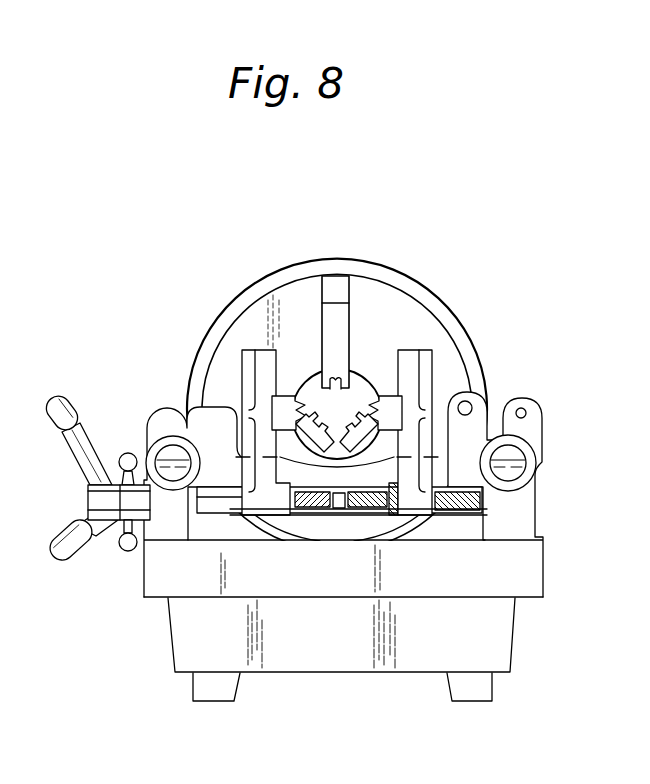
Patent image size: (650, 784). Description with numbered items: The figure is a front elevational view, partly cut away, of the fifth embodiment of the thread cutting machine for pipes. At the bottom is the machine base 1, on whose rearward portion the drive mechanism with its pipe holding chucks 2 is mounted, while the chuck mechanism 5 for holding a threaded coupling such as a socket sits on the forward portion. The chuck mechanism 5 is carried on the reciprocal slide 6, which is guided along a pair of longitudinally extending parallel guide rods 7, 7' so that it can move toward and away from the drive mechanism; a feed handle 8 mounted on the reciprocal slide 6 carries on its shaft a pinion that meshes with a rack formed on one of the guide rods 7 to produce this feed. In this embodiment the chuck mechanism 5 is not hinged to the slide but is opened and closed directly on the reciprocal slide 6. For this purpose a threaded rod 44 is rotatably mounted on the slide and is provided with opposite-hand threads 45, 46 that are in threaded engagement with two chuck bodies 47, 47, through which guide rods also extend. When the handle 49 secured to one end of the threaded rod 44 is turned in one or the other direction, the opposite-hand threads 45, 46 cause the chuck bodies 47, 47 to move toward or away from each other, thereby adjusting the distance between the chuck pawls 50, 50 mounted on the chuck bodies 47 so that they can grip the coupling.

The machine base 1 is at (508, 635).
The pipe holding chuck 2 is at (343, 318).
The chuck mechanism 5 is at (437, 347).
The reciprocal slide 6 is at (150, 522).
The guide rod 7 is at (193, 481).
The guide rod 7' is at (519, 494).
The feed handle 8 is at (84, 440).
The threaded rod 44 is at (338, 508).
The opposite-hand thread 45 is at (318, 497).
The opposite-hand thread 46 is at (447, 498).
The chuck body 47 is at (263, 358).
The handle 49 is at (117, 542).
The chuck pawl 50 is at (282, 403).